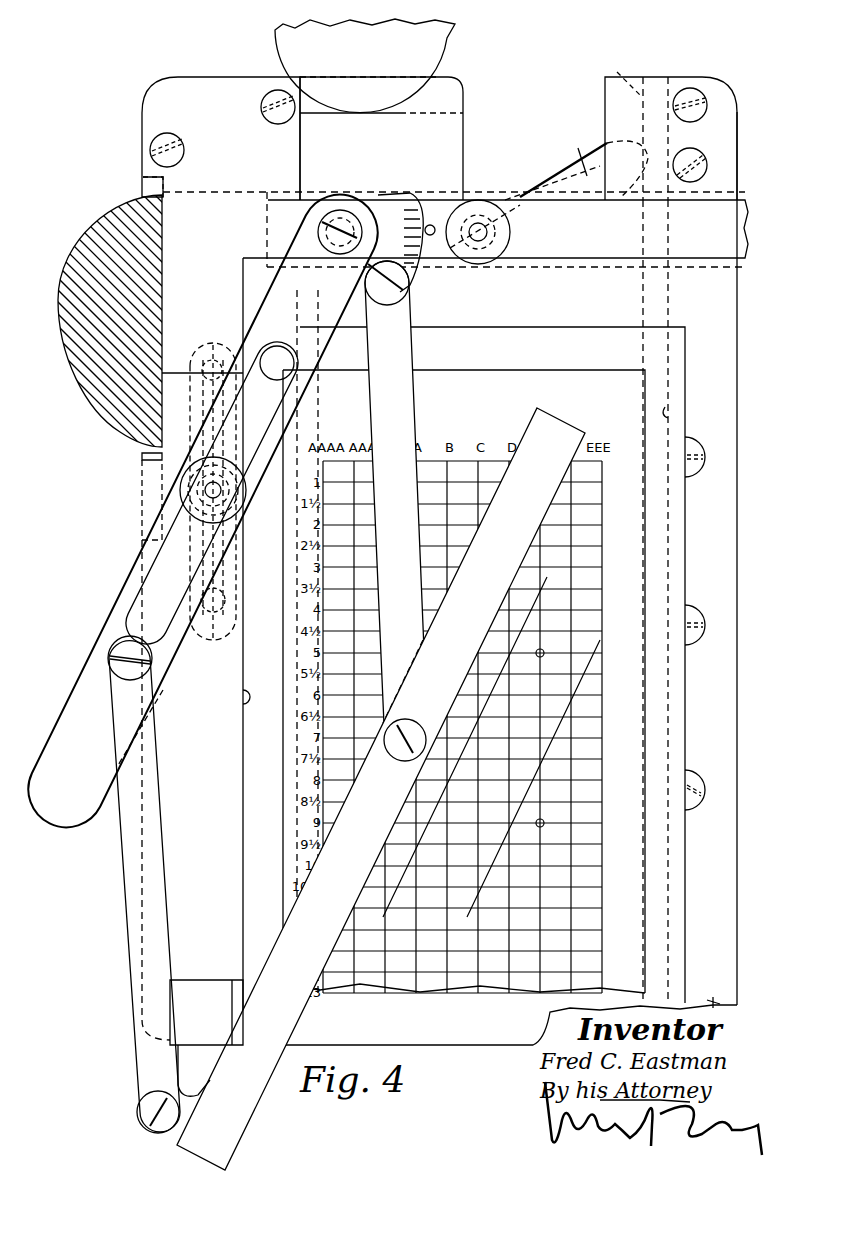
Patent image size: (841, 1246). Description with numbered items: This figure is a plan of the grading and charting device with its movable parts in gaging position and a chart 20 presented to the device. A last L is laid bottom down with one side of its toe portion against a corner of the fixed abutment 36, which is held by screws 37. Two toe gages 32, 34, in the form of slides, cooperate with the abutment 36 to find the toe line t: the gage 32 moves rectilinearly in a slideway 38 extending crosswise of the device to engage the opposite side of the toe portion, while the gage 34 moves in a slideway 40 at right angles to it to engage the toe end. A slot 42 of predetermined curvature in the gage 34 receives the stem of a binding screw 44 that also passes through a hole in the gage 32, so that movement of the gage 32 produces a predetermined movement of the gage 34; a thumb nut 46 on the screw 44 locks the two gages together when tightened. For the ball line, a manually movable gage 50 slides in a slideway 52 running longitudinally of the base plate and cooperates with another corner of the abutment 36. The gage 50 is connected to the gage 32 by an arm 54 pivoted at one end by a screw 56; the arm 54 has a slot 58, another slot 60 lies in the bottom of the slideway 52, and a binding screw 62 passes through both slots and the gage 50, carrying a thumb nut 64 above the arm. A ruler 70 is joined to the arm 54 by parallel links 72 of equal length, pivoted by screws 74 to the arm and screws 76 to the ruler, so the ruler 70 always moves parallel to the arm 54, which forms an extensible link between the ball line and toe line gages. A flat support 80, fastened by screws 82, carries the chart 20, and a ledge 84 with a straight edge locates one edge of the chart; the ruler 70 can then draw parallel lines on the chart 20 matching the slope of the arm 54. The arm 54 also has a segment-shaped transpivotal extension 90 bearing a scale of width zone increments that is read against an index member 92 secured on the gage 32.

The chart 20 is at (627, 568).
The toe gage 32 is at (450, 85).
The toe gage 34 is at (485, 117).
The fixed abutment 36 is at (175, 85).
The screws 37 is at (184, 148).
The slideway 38 is at (712, 190).
The slideway 40 is at (298, 93).
The slot 42 is at (585, 175).
The binding screw 44 is at (478, 248).
The thumb nut 46 is at (508, 237).
The ball line gage 50 is at (148, 485).
The slideway 52 is at (243, 998).
The arm 54 is at (312, 205).
The screw 56 is at (340, 210).
The slot 58 is at (272, 347).
The slot 60 is at (213, 350).
The binding screw 62 is at (213, 488).
The thumb nut 64 is at (198, 465).
The ruler 70 is at (548, 423).
The parallel links 72 is at (405, 418).
The screws 74 is at (395, 295).
The screws 76 is at (403, 755).
The flat support 80 is at (722, 327).
The screws 82 is at (695, 637).
The ledge 84 is at (242, 708).
The transpivotal extension 90 is at (382, 213).
The index member 92 is at (431, 225).
The last L is at (437, 47).
The toe line t is at (355, 76).